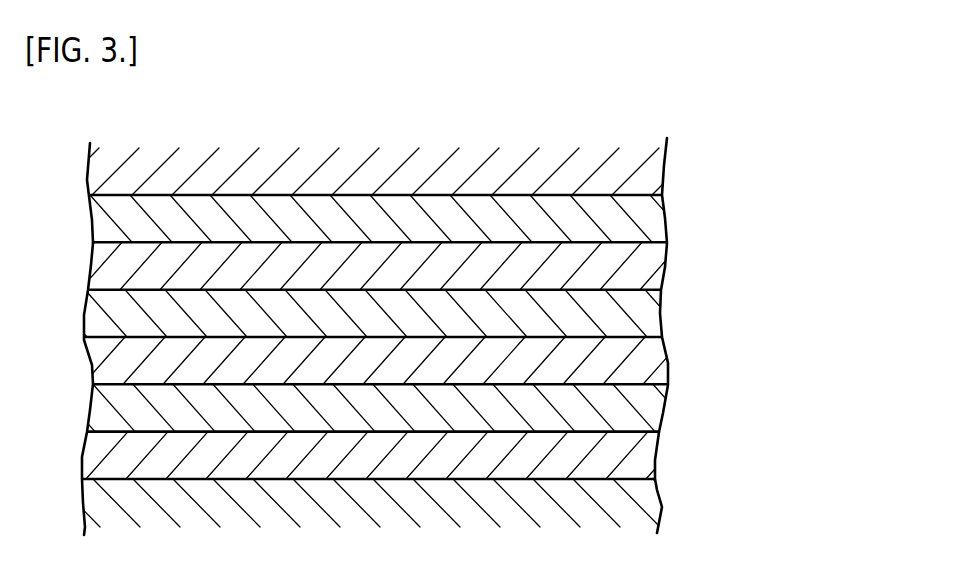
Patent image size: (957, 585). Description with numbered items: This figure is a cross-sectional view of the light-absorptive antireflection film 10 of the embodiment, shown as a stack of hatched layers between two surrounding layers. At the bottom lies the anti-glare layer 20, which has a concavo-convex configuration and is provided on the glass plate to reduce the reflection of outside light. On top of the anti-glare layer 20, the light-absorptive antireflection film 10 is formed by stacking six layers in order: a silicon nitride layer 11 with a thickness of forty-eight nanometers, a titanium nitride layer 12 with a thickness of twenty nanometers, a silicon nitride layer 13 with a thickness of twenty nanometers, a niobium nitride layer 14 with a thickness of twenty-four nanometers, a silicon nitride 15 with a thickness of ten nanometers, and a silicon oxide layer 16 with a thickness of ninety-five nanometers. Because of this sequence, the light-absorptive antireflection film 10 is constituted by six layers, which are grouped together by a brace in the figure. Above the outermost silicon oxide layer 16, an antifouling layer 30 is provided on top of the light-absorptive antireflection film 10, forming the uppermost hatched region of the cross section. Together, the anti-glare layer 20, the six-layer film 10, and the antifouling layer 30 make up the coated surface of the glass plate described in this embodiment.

The light-absorptive antireflection film 10 is at (470, 335).
The silicon nitride layer 11 is at (423, 460).
The titanium nitride layer 12 is at (652, 413).
The silicon nitride layer 13 is at (652, 365).
The niobium nitride layer 14 is at (659, 318).
The silicon nitride layer 15 is at (657, 270).
The silicon oxide layer 16 is at (653, 223).
The anti-glare layer 20 is at (652, 506).
The antifouling layer 30 is at (650, 170).